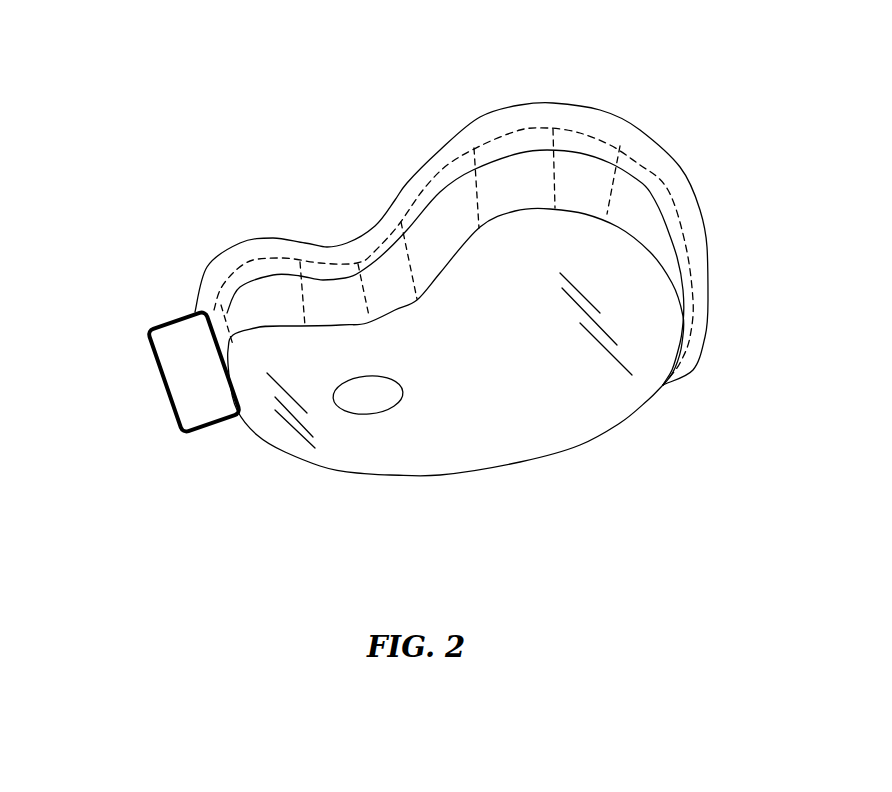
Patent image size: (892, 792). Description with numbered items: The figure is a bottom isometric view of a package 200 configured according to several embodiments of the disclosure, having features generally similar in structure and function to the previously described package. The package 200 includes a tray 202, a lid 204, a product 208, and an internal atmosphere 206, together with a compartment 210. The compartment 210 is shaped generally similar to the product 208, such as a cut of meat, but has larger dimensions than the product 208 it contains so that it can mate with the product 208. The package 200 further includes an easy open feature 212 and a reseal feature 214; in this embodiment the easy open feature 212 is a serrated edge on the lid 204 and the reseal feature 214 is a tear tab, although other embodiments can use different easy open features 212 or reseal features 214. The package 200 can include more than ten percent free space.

The package 200 is at (620, 460).
The tray 202 is at (480, 165).
The lid 204 is at (683, 165).
The internal atmosphere 206 is at (579, 148).
The product 208 is at (643, 333).
The compartment 210 is at (357, 293).
The easy open feature 212 is at (243, 267).
The reseal feature 214 is at (177, 395).